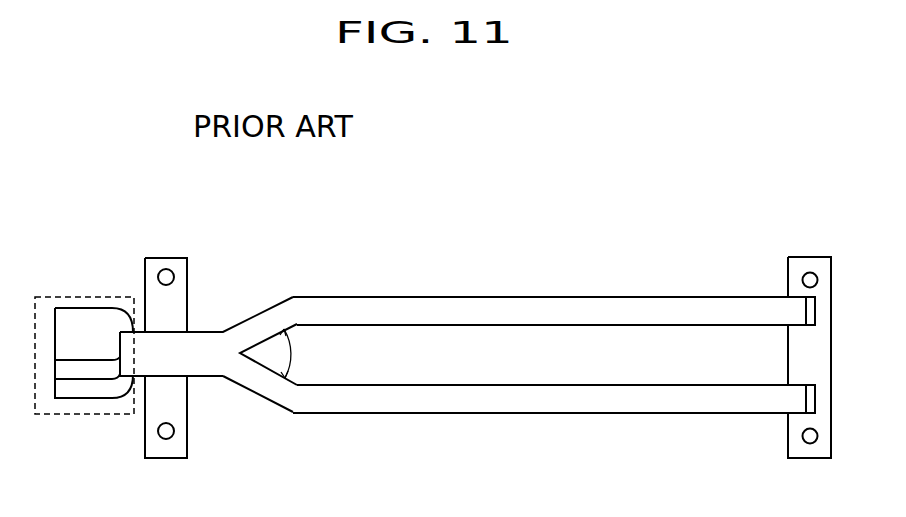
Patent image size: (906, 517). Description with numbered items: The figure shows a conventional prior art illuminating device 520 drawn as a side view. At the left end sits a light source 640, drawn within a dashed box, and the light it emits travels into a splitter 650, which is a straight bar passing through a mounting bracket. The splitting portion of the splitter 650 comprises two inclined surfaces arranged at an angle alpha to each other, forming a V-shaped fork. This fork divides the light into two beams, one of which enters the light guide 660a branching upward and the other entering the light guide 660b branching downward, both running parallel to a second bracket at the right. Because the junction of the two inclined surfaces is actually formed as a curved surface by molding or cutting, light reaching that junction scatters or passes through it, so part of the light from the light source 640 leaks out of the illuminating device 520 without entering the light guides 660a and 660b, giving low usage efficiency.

The illuminating device 520 is at (475, 305).
The light source 640 is at (87, 295).
The splitter 650 is at (205, 345).
The light guide 660a is at (503, 297).
The light guide 660b is at (503, 385).